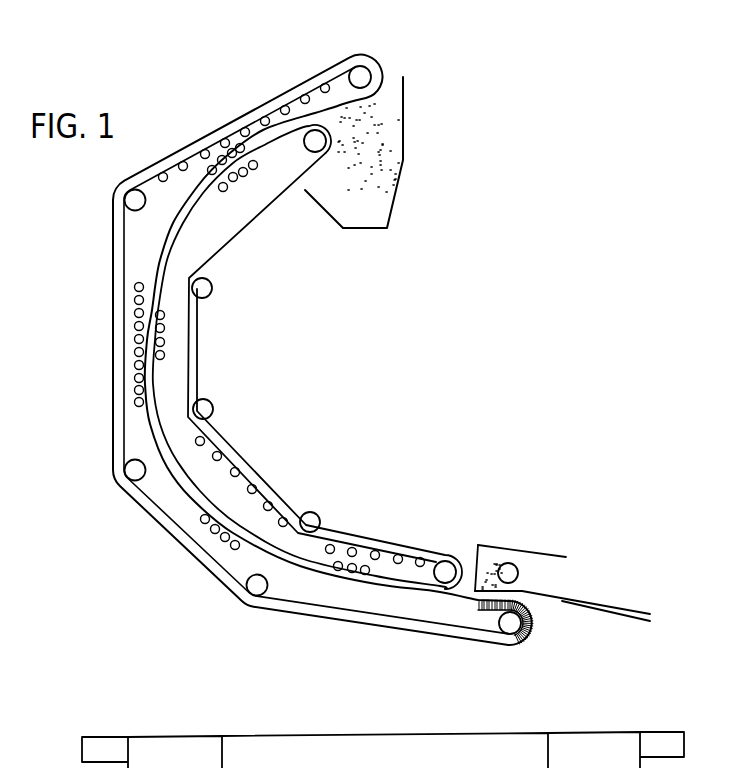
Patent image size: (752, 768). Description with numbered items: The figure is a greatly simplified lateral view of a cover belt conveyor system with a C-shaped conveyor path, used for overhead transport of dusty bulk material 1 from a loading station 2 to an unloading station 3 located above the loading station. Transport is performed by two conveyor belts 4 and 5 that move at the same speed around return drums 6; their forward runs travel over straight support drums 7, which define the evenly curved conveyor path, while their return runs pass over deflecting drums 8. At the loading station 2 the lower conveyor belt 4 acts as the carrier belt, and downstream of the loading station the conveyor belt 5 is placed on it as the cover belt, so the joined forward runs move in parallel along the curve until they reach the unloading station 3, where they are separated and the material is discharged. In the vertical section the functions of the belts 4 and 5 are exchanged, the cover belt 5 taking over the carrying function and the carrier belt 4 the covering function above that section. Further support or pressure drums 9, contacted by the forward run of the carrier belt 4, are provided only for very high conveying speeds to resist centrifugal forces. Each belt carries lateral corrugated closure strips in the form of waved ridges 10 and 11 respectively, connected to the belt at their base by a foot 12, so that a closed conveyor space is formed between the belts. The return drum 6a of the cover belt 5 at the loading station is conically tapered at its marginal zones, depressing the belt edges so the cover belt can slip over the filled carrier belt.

The dusty bulk material 1 is at (387, 172).
The loading station 2 is at (486, 544).
The unloading station 3 is at (421, 94).
The conveyor belt 4 is at (218, 118).
The conveyor belt 5 is at (250, 242).
The return drums 6 is at (511, 635).
The return drum 6a is at (358, 70).
The support drums 7 is at (234, 188).
The deflecting drums 8 is at (134, 201).
The support or pressure drums 9 is at (133, 364).
The waved ridges 10 is at (403, 621).
The waved ridges 11 is at (350, 546).
The foot 12 is at (491, 609).